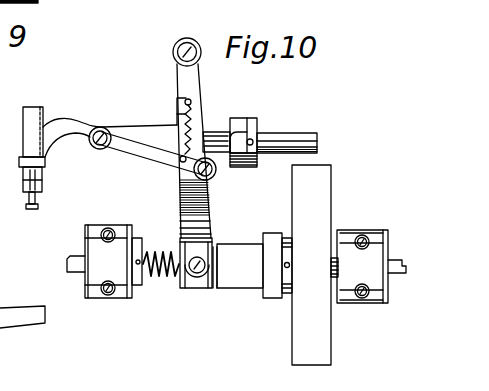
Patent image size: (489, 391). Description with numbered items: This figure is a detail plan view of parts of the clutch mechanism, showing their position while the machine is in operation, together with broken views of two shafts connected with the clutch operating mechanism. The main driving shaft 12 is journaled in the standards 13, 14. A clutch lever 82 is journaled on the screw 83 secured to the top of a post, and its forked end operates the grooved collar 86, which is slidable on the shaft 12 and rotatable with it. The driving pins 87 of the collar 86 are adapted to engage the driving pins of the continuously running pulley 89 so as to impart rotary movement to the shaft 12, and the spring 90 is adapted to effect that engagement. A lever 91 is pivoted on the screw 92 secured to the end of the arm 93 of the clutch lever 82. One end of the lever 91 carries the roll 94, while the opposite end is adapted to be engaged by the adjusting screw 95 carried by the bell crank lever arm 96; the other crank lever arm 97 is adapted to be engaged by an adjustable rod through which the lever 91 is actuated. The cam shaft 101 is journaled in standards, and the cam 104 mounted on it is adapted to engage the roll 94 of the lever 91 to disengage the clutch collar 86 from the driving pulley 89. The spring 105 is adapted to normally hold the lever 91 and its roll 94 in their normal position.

The main driving shaft 12 is at (67, 263).
The standard 13 is at (113, 261).
The standard 14 is at (362, 266).
The clutch lever 82 is at (196, 88).
The screw 83 is at (173, 56).
The grooved collar 86 is at (221, 263).
The driving pins 87 is at (290, 236).
The continuously running pulley 89 is at (315, 265).
The spring 90 is at (161, 252).
The lever 91 is at (158, 158).
The screw 92 is at (102, 150).
The arm 93 is at (137, 124).
The roll 94 is at (216, 177).
The adjusting screw 95 is at (36, 206).
The bell crank lever arm 96 is at (43, 187).
The crank lever arm 97 is at (24, 132).
The cam shaft 101 is at (306, 134).
The cam 104 is at (233, 134).
The spring 105 is at (186, 113).